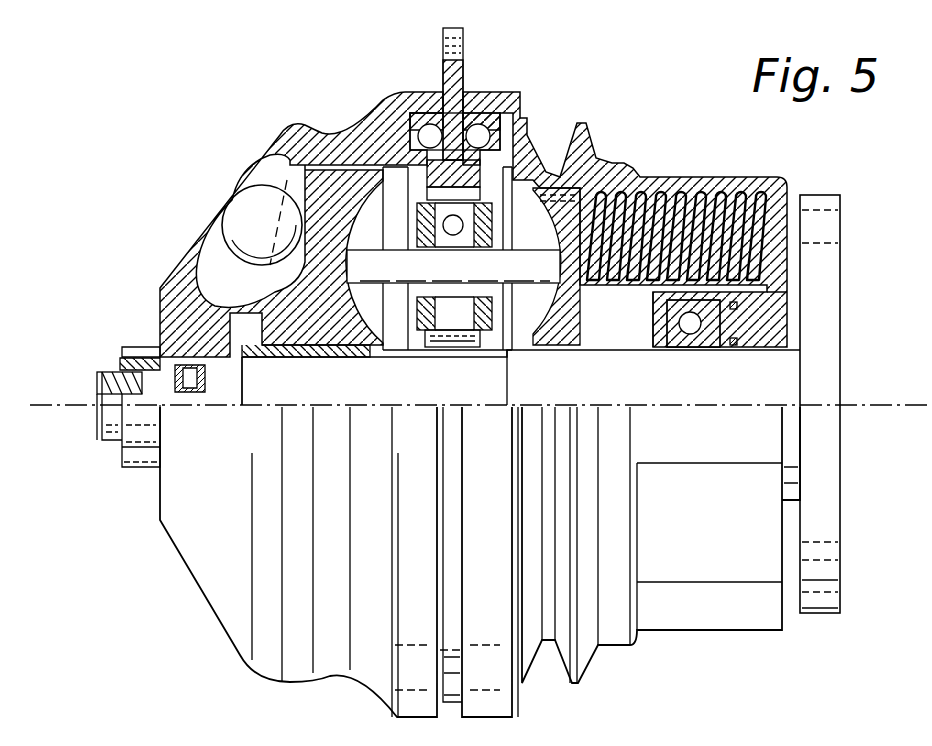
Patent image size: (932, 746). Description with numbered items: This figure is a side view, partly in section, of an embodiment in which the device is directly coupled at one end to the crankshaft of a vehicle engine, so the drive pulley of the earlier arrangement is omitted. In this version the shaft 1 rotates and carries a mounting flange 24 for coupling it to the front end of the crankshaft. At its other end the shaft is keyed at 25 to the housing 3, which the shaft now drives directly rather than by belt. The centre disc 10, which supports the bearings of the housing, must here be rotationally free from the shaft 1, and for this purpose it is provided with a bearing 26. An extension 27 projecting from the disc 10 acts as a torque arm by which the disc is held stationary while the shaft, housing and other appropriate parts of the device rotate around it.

The shaft 1 is at (722, 394).
The housing 3 is at (190, 250).
The centre disc 10 is at (477, 178).
The mounting flange 24 is at (827, 305).
The key 25 is at (193, 375).
The bearing 26 is at (450, 350).
The extension 27 is at (463, 52).